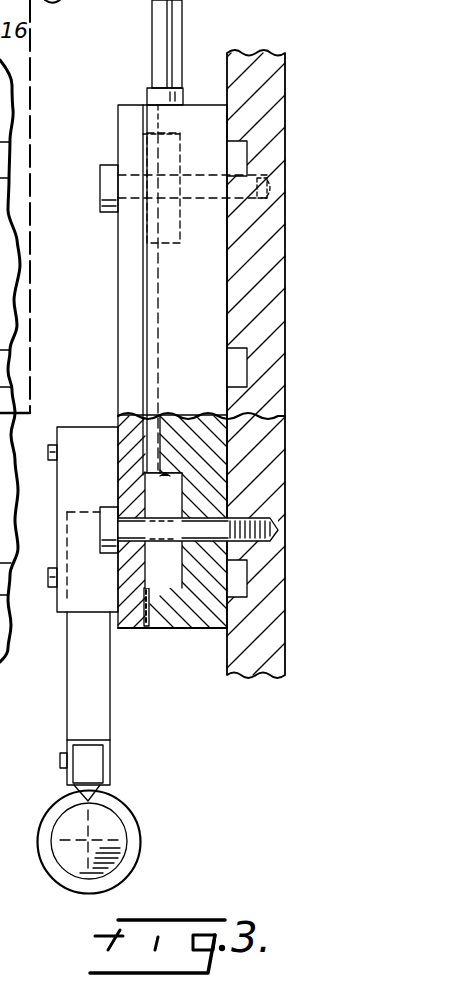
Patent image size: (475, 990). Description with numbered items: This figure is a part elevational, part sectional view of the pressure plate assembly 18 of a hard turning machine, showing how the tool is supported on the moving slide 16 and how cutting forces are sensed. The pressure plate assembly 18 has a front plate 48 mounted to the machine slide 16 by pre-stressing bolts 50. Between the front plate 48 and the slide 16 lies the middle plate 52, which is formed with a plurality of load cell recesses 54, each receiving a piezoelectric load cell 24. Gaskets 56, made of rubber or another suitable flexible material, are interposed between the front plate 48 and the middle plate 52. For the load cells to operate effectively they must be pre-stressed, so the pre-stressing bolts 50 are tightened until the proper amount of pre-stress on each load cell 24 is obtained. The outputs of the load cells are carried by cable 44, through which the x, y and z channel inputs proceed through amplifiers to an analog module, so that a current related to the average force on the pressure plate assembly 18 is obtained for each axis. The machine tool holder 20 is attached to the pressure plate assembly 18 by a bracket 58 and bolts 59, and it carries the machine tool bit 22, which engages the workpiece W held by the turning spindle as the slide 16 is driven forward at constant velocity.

The slide 16 is at (248, 62).
The pressure plate assembly 18 is at (196, 108).
The machine tool holder 20 is at (76, 690).
The machine tool bit 22 is at (100, 766).
The load cell 24 is at (160, 212).
The cable 44 is at (152, 6).
The front plate 48 is at (134, 620).
The pre-stressing bolts 50 is at (105, 184).
The middle plate 52 is at (214, 632).
The load cell recesses 54 is at (168, 474).
The gaskets 56 is at (142, 118).
The bracket 58 is at (94, 404).
The bolts 59 is at (50, 448).
The workpiece W is at (53, 875).